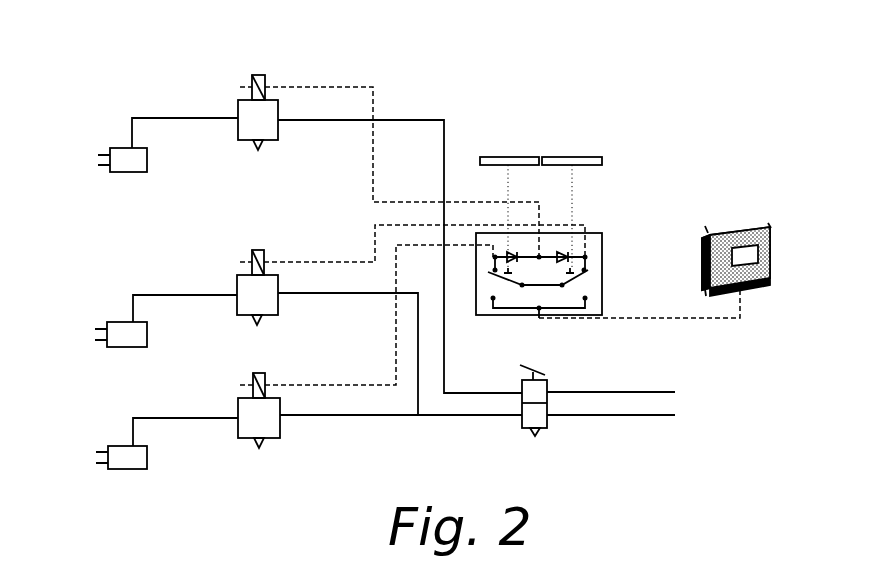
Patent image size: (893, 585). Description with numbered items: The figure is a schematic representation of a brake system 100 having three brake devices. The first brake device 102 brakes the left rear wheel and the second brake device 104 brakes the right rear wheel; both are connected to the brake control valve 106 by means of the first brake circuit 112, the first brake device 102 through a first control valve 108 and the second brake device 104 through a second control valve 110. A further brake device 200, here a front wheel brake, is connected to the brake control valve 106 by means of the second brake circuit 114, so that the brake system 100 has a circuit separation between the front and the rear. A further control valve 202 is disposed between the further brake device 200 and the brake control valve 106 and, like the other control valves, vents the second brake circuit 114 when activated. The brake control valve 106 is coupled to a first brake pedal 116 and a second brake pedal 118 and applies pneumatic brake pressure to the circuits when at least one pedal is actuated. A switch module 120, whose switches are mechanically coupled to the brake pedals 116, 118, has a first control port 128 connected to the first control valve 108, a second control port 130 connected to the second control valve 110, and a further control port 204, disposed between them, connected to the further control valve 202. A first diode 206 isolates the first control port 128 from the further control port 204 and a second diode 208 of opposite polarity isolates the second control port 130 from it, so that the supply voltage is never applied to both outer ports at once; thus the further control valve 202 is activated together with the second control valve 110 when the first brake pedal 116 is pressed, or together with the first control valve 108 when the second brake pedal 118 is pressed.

The brake system 100 is at (106, 60).
The first brake device 102 is at (147, 458).
The second brake device 104 is at (147, 335).
The brake control valve 106 is at (547, 420).
The first control valve 108 is at (280, 428).
The second control valve 110 is at (278, 305).
The first brake circuit 112 is at (395, 417).
The second brake circuit 114 is at (406, 120).
The first brake pedal 116 is at (503, 157).
The second brake pedal 118 is at (573, 157).
The switch module 120 is at (600, 237).
The first control port 128 is at (495, 258).
The second control port 130 is at (585, 257).
The further brake device 200 is at (130, 172).
The further control valve 202 is at (278, 130).
The further control port 204 is at (540, 256).
The first diode 206 is at (510, 254).
The second diode 208 is at (568, 256).